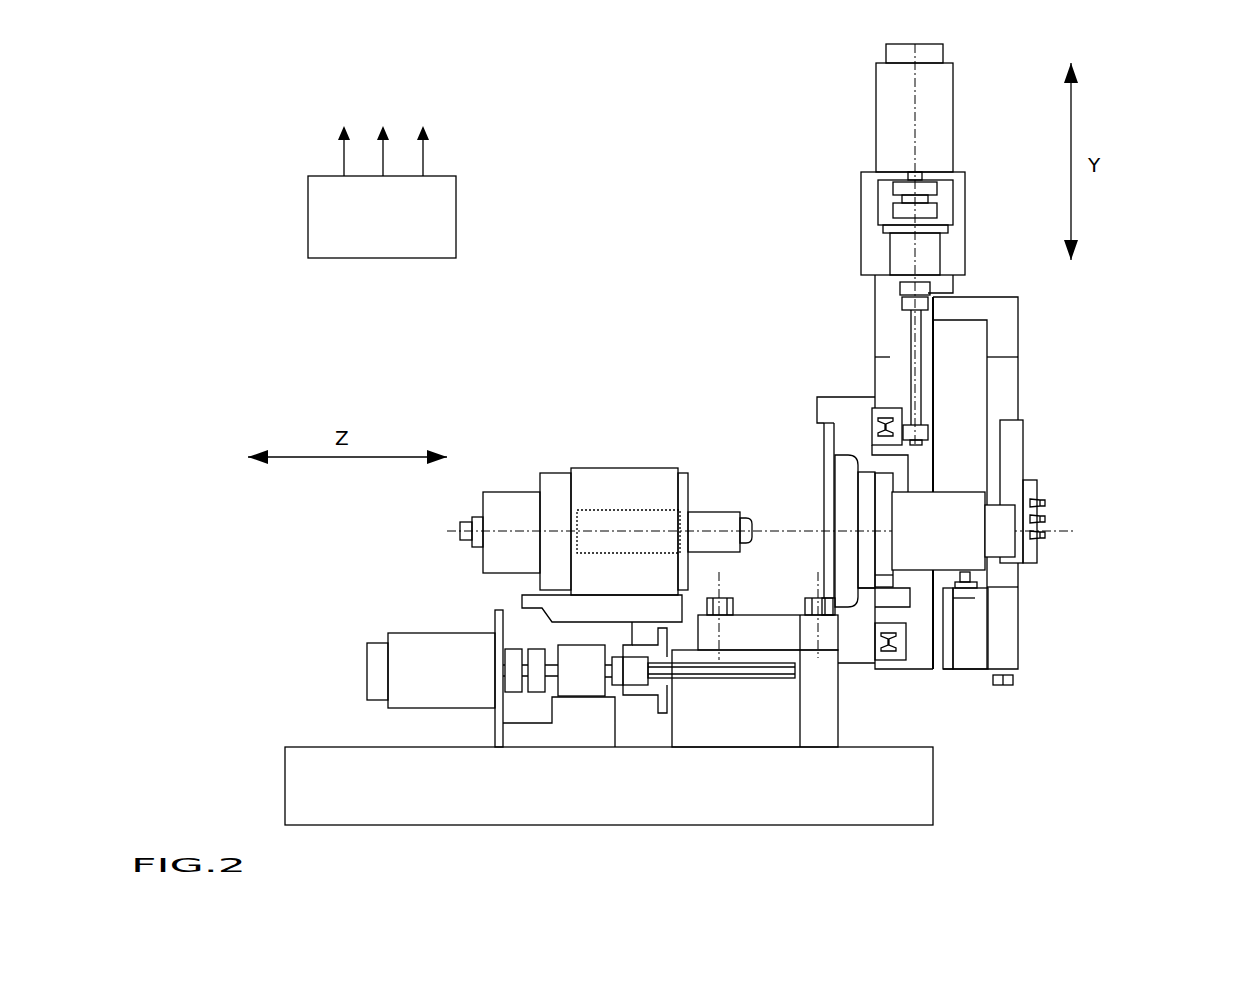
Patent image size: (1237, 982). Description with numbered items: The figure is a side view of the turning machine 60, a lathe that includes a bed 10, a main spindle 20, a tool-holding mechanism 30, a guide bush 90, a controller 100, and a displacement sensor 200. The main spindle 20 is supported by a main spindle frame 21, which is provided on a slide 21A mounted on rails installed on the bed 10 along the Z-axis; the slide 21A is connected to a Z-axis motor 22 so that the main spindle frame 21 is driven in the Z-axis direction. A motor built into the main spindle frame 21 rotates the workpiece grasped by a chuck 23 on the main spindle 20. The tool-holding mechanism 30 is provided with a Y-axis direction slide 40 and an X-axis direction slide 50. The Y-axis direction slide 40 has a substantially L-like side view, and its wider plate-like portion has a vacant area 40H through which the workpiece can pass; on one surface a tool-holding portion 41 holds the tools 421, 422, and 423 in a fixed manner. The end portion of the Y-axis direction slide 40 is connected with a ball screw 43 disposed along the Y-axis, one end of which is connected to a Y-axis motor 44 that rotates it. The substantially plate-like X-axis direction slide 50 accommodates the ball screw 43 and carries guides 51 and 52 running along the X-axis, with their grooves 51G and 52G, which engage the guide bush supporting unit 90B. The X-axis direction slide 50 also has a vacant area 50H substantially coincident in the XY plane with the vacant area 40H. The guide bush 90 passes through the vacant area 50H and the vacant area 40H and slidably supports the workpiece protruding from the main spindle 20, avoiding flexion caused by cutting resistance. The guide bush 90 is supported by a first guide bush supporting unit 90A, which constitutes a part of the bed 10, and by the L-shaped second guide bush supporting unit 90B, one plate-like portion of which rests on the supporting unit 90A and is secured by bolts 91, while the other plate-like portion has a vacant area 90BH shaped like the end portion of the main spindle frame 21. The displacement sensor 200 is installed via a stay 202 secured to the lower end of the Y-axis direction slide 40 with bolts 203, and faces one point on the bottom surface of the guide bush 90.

The bed 10 is at (413, 815).
The main spindle 20 is at (606, 463).
The main spindle frame 21 is at (622, 480).
The slide 21A is at (593, 612).
The Z-axis motor 22 is at (403, 635).
The chuck 23 is at (747, 515).
The tool-holding mechanism 30 is at (1100, 352).
The Y-axis direction slide 40 is at (1023, 481).
The vacant area 40H is at (1003, 362).
The tool-holding portion 41 is at (1037, 480).
The ball screw 43 is at (966, 292).
The Y-axis motor 44 is at (948, 129).
The X-axis direction slide 50 is at (933, 467).
The vacant area 50H is at (876, 357).
The guide 51 is at (831, 384).
The nut guide groove 51G is at (900, 408).
The guide 52 is at (853, 607).
The guide groove 52G is at (878, 640).
The turning machine 60 is at (306, 77).
The guide bush 90 is at (963, 505).
The first guide bush supporting unit 90A is at (835, 688).
The second guide bush supporting unit 90B is at (805, 505).
The vacant area 90BH is at (823, 470).
The bolts 91 is at (700, 617).
The controller 100 is at (457, 240).
The displacement sensor 200 is at (930, 583).
The stay 202 is at (943, 673).
The bolts 203 is at (1004, 687).
The tool 421 is at (1047, 537).
The tool 422 is at (1048, 520).
The tool 423 is at (1045, 502).